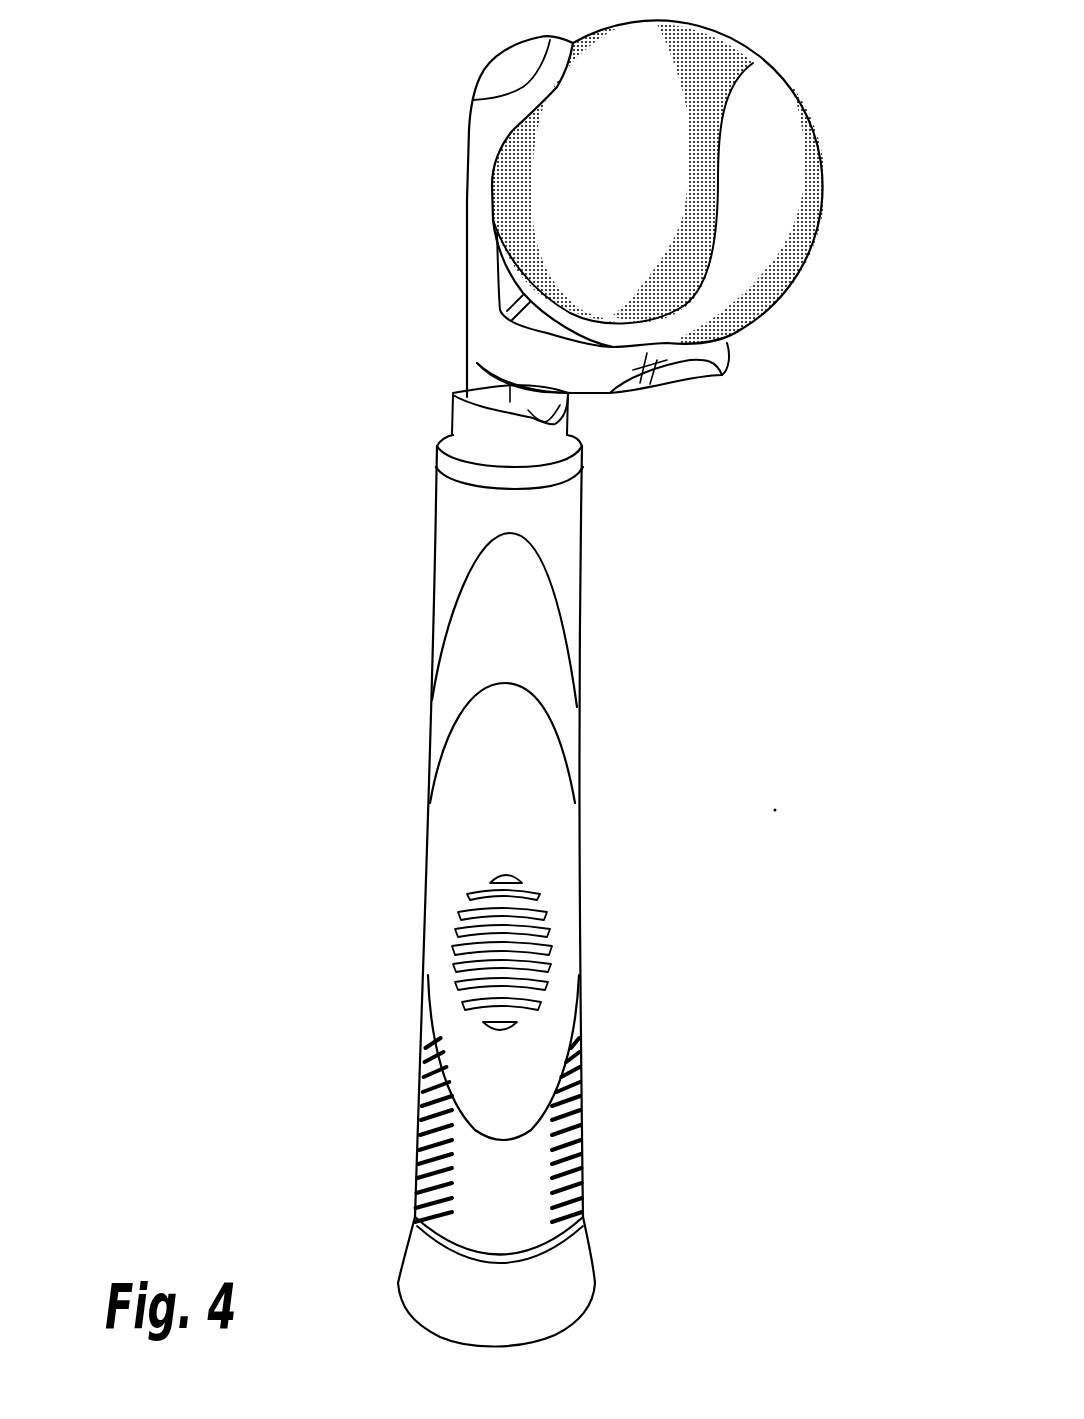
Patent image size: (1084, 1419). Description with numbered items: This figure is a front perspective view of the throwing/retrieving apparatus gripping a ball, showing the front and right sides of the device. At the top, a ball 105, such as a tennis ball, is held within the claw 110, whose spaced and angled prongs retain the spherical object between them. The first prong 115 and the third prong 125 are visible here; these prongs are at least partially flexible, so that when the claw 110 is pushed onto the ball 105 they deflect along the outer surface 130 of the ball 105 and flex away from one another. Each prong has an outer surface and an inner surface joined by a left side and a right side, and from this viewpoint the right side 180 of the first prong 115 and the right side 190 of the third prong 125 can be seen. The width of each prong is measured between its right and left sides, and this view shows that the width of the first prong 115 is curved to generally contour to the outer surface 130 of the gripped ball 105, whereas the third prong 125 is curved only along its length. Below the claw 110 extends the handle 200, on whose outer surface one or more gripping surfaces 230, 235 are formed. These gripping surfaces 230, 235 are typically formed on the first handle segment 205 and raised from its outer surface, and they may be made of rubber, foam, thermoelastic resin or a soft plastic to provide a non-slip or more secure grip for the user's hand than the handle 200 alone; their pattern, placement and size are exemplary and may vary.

The ball 105 is at (758, 31).
The claw 110 is at (447, 318).
The first prong 115 is at (683, 392).
The third prong 125 is at (473, 100).
The outer surface 130 is at (823, 235).
The right side 180 is at (607, 398).
The right side 190 is at (493, 130).
The handle 200 is at (396, 1143).
The first handle segment 205 is at (493, 585).
The gripping surface 230 is at (560, 930).
The gripping surface 235 is at (580, 1150).